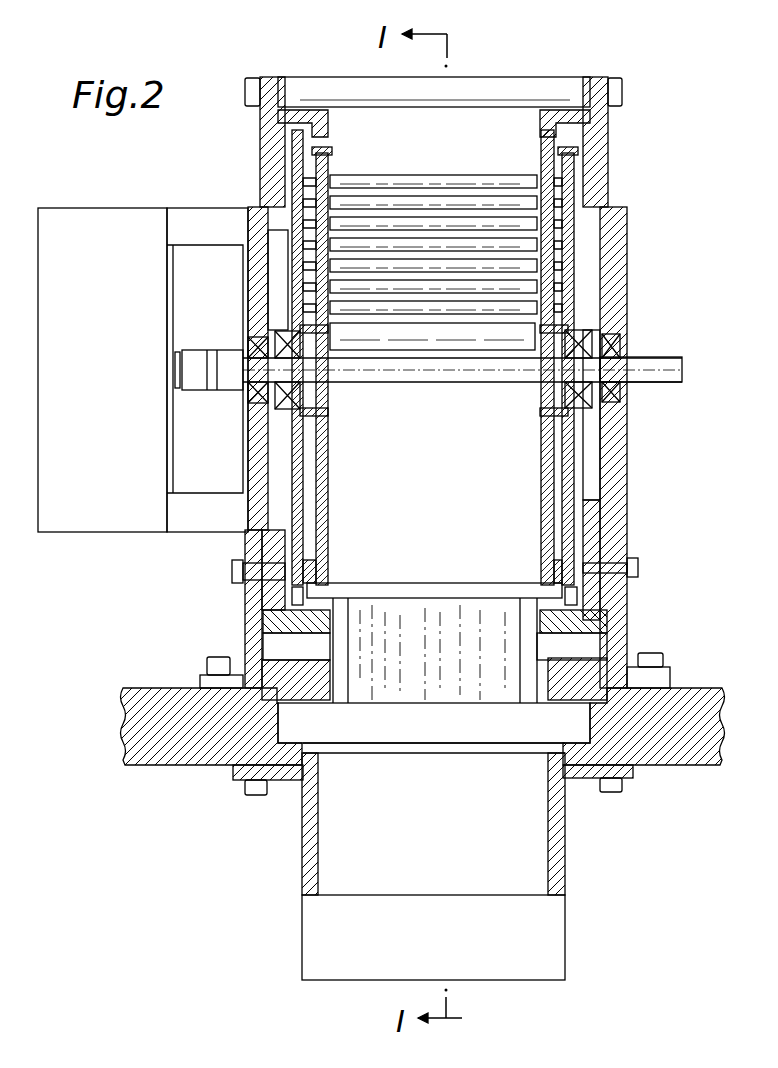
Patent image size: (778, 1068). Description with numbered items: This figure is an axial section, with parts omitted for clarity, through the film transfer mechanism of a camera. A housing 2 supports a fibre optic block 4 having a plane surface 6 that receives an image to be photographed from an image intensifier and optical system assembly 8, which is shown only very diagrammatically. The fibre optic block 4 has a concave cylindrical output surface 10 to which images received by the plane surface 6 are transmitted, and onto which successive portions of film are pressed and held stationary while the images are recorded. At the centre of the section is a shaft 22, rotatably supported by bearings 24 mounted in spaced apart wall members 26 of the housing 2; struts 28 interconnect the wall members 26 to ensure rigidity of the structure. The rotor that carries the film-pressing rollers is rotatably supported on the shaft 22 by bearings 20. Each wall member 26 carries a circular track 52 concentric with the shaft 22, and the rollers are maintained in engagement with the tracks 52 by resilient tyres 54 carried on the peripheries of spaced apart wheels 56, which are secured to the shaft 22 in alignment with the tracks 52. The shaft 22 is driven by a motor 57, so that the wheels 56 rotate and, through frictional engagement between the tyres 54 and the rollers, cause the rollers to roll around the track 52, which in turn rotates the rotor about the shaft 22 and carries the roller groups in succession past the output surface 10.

The housing 2 is at (175, 753).
The fibre optic block 4 is at (472, 692).
The plane surface 6 is at (408, 704).
The image intensifier and optical system assembly 8 is at (335, 862).
The concave cylindrical output surface 10 is at (380, 600).
The bearings 20 is at (270, 398).
The shaft 22 is at (440, 383).
The bearings 24 is at (248, 345).
The wall members 26 is at (262, 150).
The struts 28 is at (503, 88).
The circular track 52 is at (335, 592).
The resilient tyres 54 is at (330, 580).
The wheels 56 is at (328, 462).
The motor 57 is at (110, 306).